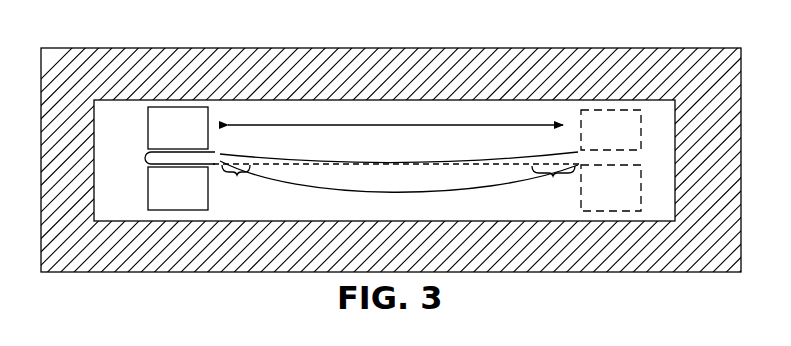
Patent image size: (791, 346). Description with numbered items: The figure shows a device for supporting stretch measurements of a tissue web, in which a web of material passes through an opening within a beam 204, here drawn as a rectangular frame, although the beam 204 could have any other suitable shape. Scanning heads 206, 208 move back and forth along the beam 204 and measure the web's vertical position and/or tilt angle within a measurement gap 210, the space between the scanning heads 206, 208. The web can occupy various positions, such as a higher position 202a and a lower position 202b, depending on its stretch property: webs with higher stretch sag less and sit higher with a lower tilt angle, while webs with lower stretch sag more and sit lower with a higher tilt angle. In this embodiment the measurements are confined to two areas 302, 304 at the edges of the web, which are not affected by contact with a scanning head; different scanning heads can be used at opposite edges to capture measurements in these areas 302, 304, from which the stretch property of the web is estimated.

The beam 204 is at (147, 45).
The scanning head 206 is at (195, 137).
The scanning head 208 is at (195, 197).
The measurement gap 210 is at (161, 157).
The web position 202a is at (329, 157).
The web position 202b is at (417, 191).
The measurement area 302 is at (236, 180).
The measurement area 304 is at (553, 182).